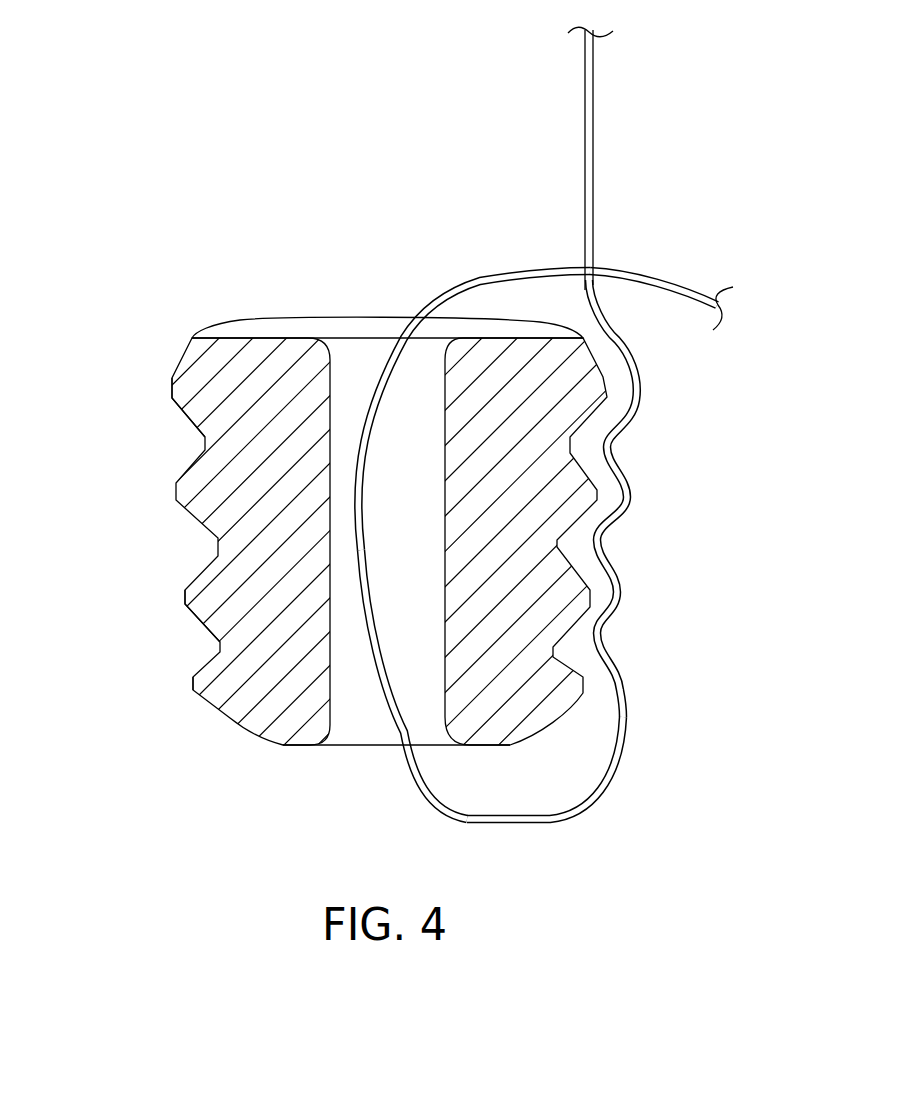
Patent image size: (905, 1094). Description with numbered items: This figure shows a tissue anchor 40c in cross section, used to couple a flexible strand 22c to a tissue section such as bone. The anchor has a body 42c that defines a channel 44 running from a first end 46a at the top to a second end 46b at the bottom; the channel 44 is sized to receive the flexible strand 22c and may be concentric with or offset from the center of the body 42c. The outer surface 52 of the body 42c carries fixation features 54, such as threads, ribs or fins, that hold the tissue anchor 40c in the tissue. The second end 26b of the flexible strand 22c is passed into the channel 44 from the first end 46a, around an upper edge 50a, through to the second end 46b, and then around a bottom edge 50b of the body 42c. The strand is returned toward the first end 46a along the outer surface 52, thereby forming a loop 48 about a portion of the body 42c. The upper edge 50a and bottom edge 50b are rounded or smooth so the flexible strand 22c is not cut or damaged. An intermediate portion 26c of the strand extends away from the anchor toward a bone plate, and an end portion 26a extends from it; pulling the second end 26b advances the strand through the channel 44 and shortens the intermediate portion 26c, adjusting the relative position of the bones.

The tissue anchor 40c is at (452, 440).
The body 42c is at (176, 492).
The flexible strand 22c is at (627, 490).
The strap end portion 26a is at (713, 297).
The second end 26b is at (593, 58).
The intermediate portion 26c is at (637, 277).
The channel 44 is at (330, 750).
The first end 46a is at (340, 300).
The second end 46b is at (360, 790).
The loop 48 is at (630, 715).
The upper edge 50a is at (457, 343).
The bottom edge 50b is at (510, 745).
The outer surface 52 is at (571, 447).
The fixation features 54 is at (170, 395).